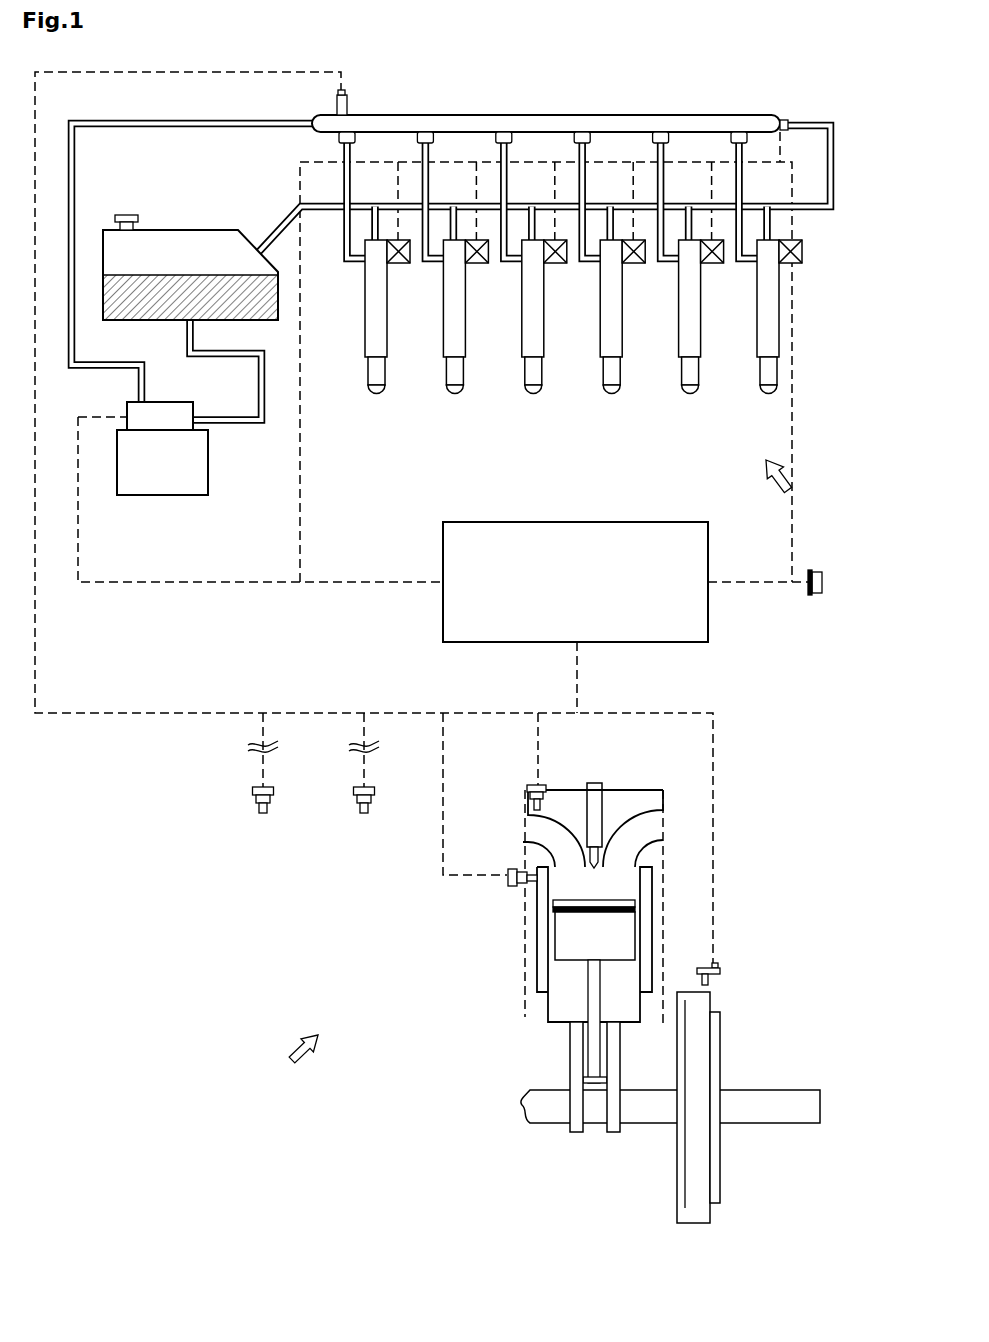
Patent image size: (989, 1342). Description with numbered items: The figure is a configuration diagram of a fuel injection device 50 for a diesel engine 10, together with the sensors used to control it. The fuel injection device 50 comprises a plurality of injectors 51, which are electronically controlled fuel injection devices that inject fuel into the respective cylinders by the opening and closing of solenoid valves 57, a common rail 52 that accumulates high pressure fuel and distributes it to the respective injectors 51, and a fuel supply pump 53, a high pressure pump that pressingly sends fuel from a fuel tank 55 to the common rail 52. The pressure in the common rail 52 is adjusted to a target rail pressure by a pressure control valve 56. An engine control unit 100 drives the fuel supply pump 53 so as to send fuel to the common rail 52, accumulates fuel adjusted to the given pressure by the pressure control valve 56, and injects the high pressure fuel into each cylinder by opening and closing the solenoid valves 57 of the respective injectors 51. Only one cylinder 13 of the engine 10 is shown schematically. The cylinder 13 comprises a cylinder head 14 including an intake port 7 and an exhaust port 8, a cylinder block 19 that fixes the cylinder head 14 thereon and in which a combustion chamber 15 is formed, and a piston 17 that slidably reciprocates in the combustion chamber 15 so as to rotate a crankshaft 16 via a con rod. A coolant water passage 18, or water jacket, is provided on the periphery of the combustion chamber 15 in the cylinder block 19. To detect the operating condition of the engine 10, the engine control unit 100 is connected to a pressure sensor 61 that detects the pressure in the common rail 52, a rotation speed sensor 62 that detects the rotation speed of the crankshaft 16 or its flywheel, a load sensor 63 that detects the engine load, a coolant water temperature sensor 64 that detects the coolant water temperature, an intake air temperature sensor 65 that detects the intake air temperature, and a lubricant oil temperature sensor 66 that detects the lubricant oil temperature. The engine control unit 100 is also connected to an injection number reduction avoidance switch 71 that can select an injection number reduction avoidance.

The engine 10 is at (291, 1061).
The cylinder 13 is at (608, 990).
The cylinder head 14 is at (610, 788).
The intake port 7 is at (527, 828).
The exhaust port 8 is at (650, 825).
The combustion chamber 15 is at (622, 883).
The crankshaft 16 is at (797, 1090).
The piston 17 is at (562, 932).
The coolant water passage 18 is at (533, 978).
The cylinder block 19 is at (540, 1017).
The fuel injection device 50 is at (797, 492).
The injector 51 is at (390, 395).
The common rail 52 is at (533, 110).
The fuel supply pump 53 is at (210, 472).
The fuel tank 55 is at (178, 227).
The pressure control valve 56 is at (788, 122).
The solenoid valve 57 is at (402, 265).
The pressure sensor 61 is at (347, 102).
The rotation speed sensor 62 is at (720, 970).
The load sensor 63 is at (364, 813).
The coolant water temperature sensor 64 is at (507, 882).
The intake air temperature sensor 65 is at (527, 786).
The lubricant oil temperature sensor 66 is at (263, 813).
The injection number reduction avoidance switch 71 is at (812, 595).
The engine control unit 100 is at (595, 597).